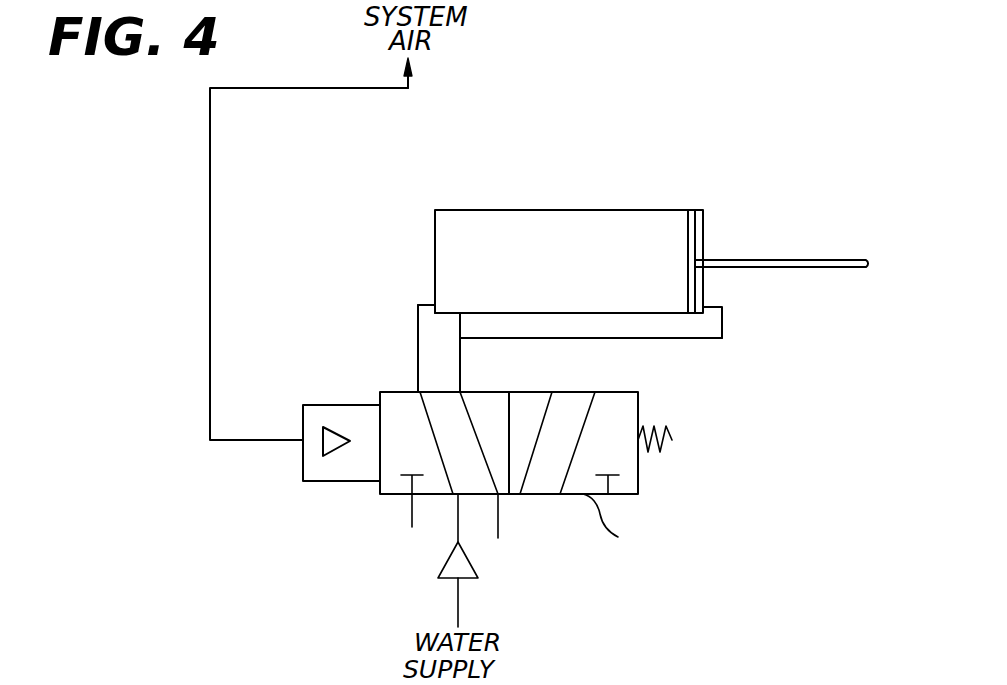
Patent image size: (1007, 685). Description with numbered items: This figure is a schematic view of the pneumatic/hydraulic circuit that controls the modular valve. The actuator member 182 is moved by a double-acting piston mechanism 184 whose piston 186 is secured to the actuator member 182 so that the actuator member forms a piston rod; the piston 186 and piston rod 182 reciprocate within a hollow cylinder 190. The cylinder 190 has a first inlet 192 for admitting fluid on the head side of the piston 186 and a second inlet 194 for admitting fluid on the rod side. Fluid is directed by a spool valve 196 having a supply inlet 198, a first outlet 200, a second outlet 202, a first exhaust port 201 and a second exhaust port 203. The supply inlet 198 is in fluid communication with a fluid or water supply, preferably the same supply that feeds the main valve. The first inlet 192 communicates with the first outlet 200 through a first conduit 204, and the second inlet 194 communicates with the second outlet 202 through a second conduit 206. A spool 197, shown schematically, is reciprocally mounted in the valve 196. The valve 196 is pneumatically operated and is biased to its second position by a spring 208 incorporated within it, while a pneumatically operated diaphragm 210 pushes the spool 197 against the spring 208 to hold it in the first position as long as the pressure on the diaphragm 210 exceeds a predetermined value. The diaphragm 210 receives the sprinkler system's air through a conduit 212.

The actuator member 182 is at (855, 195).
The double-acting piston mechanism 184 is at (618, 197).
The piston 186 is at (694, 226).
The hollow cylinder 190 is at (533, 220).
The first inlet 192 is at (423, 303).
The second inlet 194 is at (710, 304).
The spool valve 196 is at (638, 467).
The spool 197 is at (636, 523).
The supply inlet 198 is at (456, 528).
The first outlet 200 is at (417, 382).
The first exhaust port 201 is at (411, 513).
The second outlet 202 is at (447, 355).
The second exhaust port 203 is at (500, 522).
The first conduit 204 is at (416, 330).
The second conduit 206 is at (690, 340).
The spring 208 is at (672, 440).
The pneumatically operated diaphragm 210 is at (314, 405).
The conduit 212 is at (210, 230).